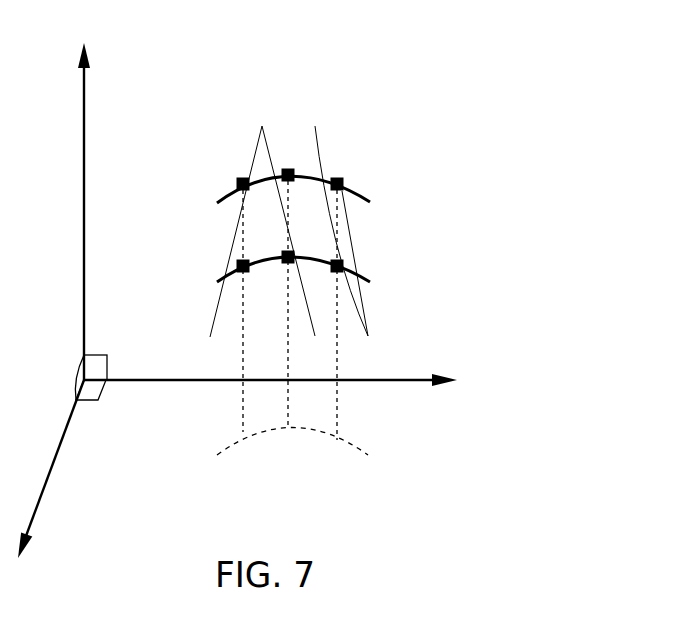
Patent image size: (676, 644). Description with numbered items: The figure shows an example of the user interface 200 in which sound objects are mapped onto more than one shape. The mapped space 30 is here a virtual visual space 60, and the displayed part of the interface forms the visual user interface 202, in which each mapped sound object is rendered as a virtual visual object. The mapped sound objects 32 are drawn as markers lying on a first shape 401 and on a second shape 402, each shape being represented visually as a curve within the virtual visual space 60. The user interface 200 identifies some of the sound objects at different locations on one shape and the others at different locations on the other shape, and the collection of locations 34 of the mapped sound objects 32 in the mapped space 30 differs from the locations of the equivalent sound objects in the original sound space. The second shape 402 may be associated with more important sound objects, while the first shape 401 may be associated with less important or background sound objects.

The mapped space 30 is at (219, 71).
The virtual visual space 60 is at (277, 71).
The mapped sound objects 32 is at (246, 177).
The locations 34 is at (240, 273).
The first shape 401 is at (370, 203).
The second shape 402 is at (370, 283).
The user interface 200 is at (502, 160).
The visual user interface 202 is at (524, 256).